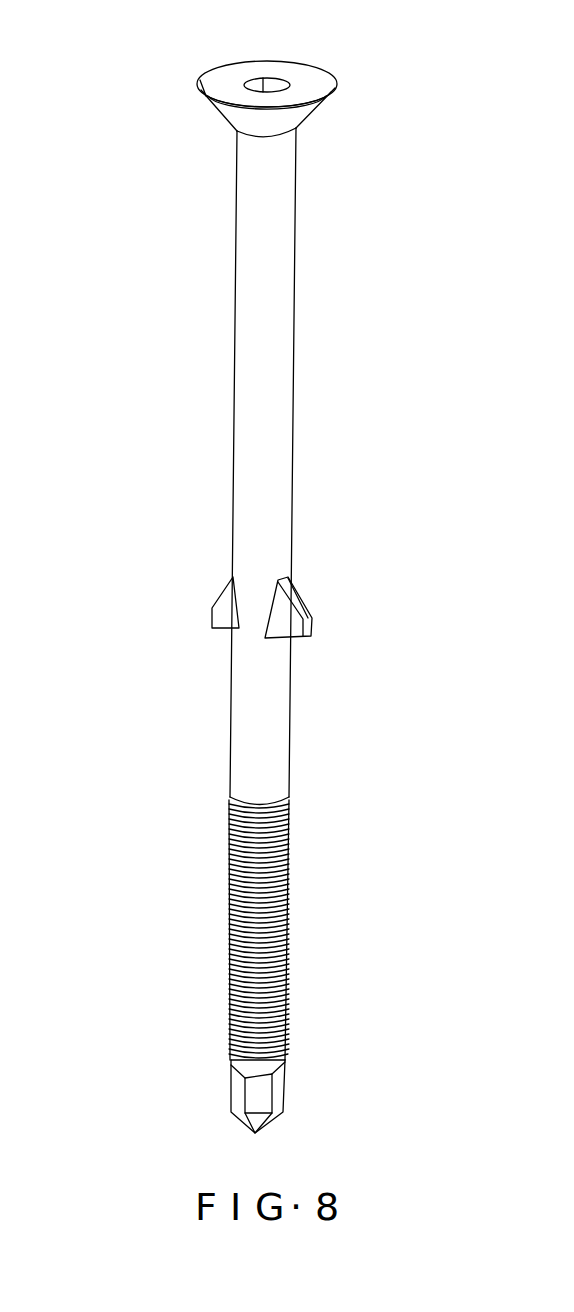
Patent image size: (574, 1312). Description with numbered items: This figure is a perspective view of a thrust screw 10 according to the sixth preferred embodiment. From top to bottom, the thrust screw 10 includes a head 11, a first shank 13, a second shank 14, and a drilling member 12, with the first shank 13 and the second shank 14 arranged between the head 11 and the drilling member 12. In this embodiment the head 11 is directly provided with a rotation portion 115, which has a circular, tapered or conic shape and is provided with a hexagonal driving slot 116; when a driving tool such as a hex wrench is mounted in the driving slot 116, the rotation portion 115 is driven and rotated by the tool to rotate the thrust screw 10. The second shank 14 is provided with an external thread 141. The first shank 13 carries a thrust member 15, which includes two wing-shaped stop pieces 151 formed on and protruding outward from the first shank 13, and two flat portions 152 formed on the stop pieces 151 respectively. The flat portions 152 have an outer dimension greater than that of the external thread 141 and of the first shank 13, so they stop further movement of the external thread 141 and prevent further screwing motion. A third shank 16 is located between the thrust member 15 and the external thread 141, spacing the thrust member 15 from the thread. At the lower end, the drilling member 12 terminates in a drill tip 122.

The thrust screw 10 is at (168, 371).
The head 11 is at (275, 68).
The rotation portion 115 is at (197, 83).
The hexagonal driving slot 116 is at (268, 82).
The first shank 13 is at (353, 162).
The thrust member 15 is at (298, 619).
The wing-shaped stop pieces 151 is at (221, 604).
The flat portions 152 is at (230, 630).
The third shank 16 is at (398, 800).
The second shank 14 is at (268, 930).
The external thread 141 is at (230, 926).
The drilling member 12 is at (266, 1097).
The drill tip 122 is at (240, 1090).